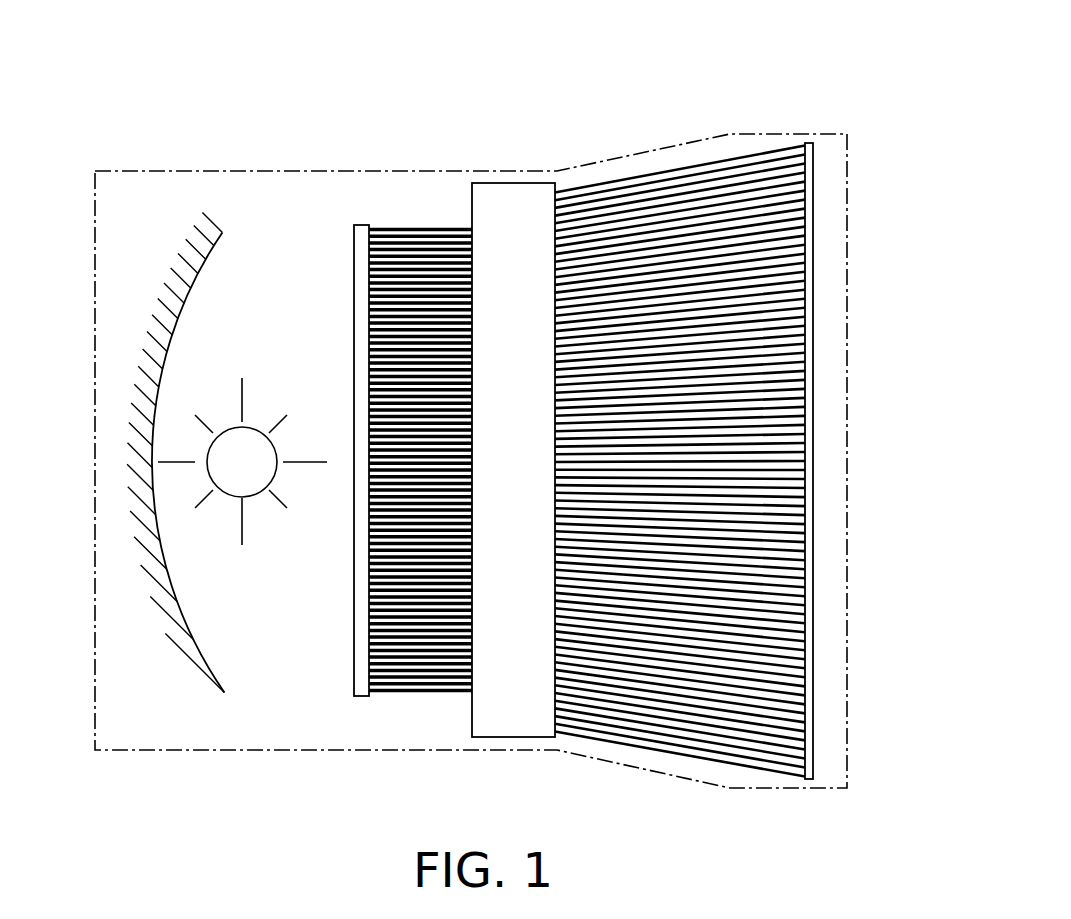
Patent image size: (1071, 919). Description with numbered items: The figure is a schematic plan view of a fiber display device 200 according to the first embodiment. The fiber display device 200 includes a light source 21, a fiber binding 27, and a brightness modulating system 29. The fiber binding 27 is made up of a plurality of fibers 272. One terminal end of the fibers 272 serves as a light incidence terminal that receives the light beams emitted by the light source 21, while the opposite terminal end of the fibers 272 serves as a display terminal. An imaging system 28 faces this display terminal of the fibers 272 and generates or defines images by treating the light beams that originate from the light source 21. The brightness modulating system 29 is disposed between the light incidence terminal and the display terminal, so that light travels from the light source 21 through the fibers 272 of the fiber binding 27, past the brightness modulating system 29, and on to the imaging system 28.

The fiber display device 200 is at (500, 37).
The light source 21 is at (243, 467).
The fiber binding 27 is at (402, 225).
The fibers 272 is at (385, 228).
The imaging system 28 is at (808, 202).
The brightness modulating system 29 is at (507, 195).